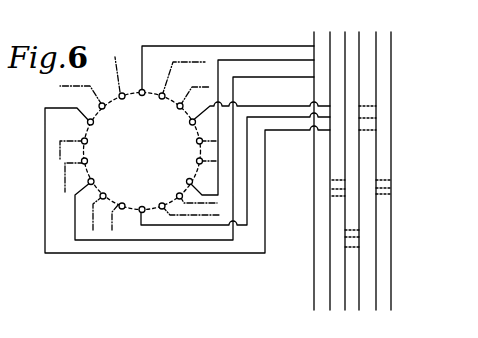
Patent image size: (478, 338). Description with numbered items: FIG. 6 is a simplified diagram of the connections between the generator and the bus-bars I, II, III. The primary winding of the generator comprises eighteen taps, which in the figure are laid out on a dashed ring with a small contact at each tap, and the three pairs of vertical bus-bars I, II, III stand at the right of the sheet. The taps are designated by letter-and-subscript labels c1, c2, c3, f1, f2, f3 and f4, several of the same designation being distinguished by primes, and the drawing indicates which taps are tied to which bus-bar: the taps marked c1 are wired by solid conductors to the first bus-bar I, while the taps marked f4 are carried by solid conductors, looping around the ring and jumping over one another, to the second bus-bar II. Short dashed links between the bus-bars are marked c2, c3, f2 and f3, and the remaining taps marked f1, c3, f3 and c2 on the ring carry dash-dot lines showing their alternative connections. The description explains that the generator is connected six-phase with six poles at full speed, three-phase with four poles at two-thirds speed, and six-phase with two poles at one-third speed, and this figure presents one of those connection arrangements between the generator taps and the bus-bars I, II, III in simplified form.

The bus-bar I is at (322, 157).
The bus-bar II is at (351, 157).
The bus-bar III is at (384, 157).
The contact segments c1 connected to bus I c1 is at (196, 140).
The contact segments c2 is at (264, 149).
The contact segments c3 is at (227, 158).
The contact segments f1 is at (153, 174).
The contact segments f2 is at (245, 153).
The contact segments f3 is at (237, 137).
The contact segments f4 connected to bus II f4 is at (196, 177).